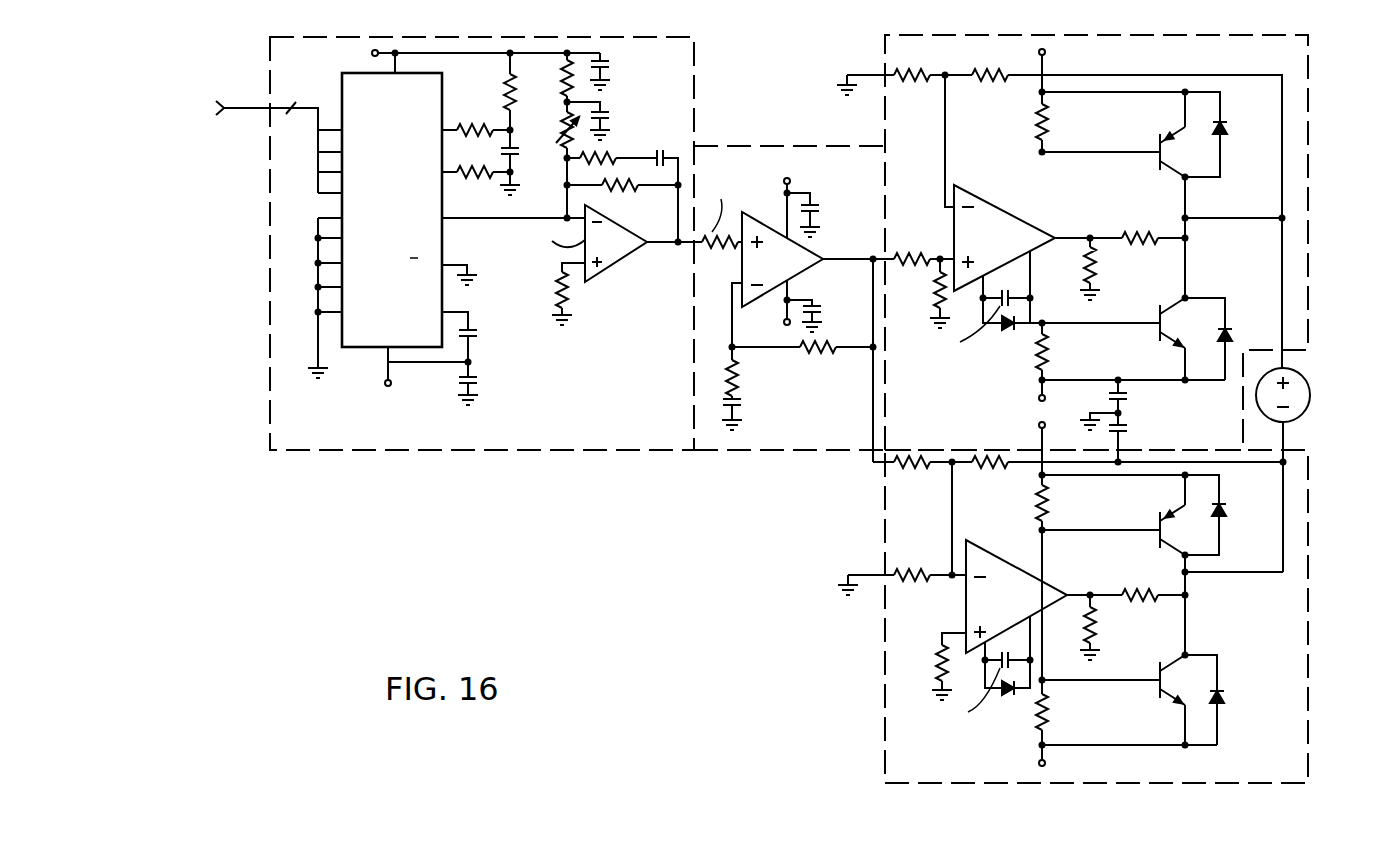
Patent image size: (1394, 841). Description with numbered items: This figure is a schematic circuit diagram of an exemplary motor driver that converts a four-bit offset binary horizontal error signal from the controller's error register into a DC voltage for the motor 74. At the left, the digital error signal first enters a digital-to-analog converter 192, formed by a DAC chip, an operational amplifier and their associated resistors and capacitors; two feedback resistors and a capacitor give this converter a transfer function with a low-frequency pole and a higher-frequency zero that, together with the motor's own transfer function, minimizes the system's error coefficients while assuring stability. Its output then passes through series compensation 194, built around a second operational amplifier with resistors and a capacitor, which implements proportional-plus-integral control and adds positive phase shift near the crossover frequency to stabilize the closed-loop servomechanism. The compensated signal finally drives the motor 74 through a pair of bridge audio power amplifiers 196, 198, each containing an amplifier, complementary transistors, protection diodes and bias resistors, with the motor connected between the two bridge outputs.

The digital-to-analog converter 192 is at (268, 388).
The series compensation 194 is at (813, 452).
The bridge audio power amplifier 196 is at (884, 53).
The bridge audio power amplifier 198 is at (884, 742).
The motor 74 is at (1310, 400).